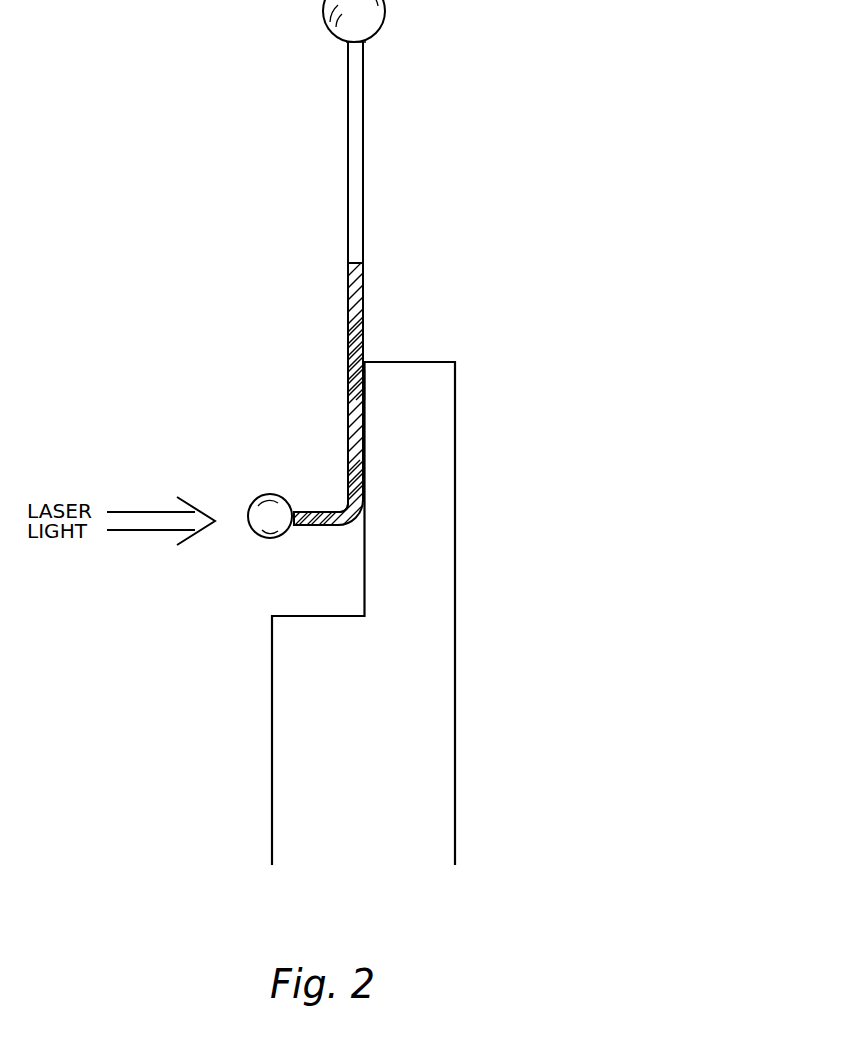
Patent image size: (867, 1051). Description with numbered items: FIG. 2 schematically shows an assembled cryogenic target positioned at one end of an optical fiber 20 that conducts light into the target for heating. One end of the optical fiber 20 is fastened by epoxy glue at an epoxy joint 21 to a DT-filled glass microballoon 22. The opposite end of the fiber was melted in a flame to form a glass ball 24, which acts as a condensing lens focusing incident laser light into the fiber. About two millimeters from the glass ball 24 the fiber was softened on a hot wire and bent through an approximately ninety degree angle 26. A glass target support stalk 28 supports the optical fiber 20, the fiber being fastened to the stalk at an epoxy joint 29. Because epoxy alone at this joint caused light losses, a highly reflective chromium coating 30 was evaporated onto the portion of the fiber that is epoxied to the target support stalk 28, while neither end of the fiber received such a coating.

The optical fiber 20 is at (347, 137).
The epoxy joint 21 is at (362, 43).
The DT-filled glass microballoon 22 is at (445, 21).
The glass ball 24 is at (261, 535).
The 90° angle 26 is at (337, 510).
The target support stalk 28 is at (455, 540).
The epoxy joint 29 is at (366, 392).
The chromium coating 30 is at (346, 307).